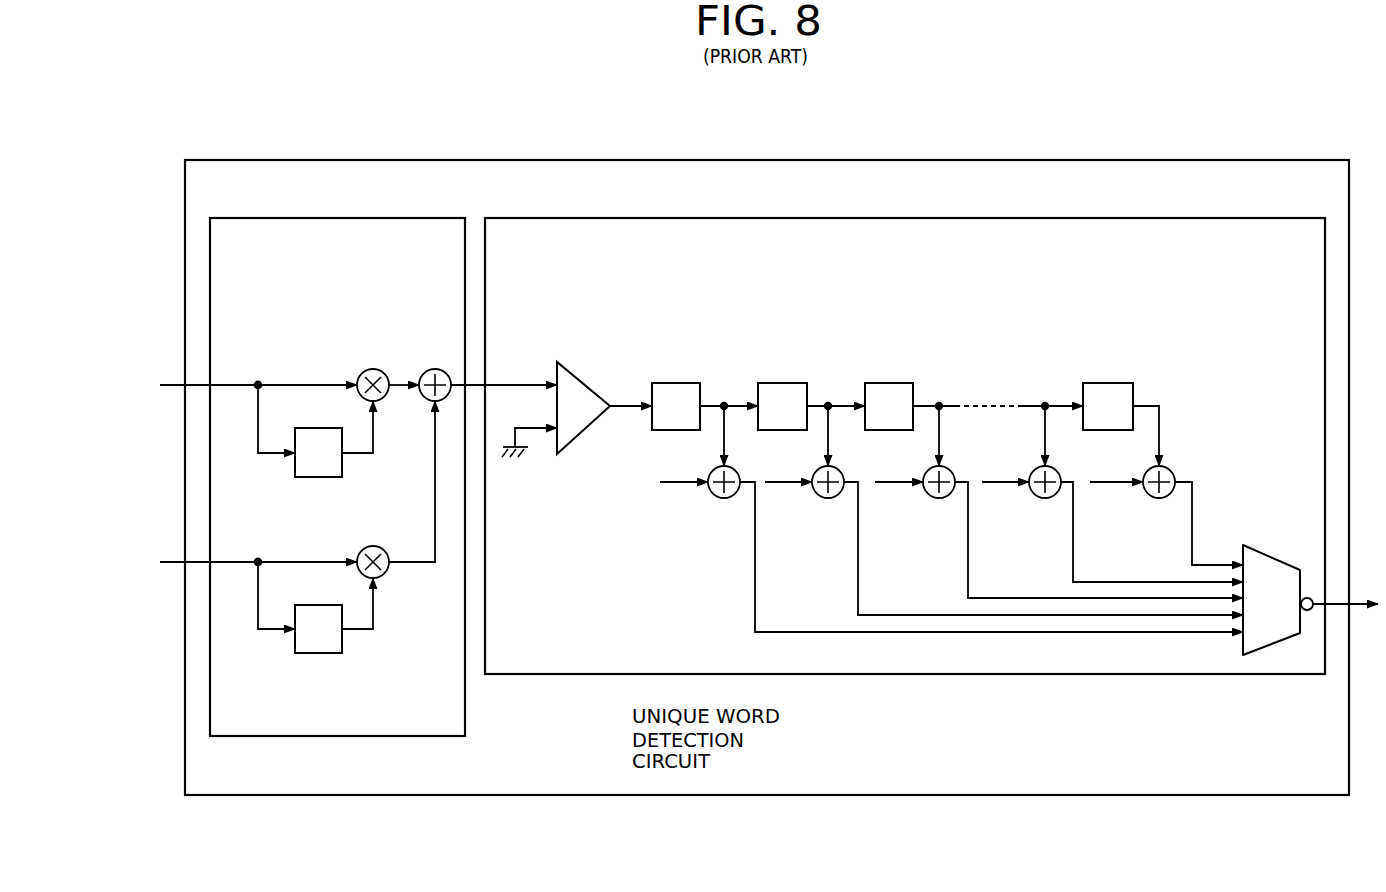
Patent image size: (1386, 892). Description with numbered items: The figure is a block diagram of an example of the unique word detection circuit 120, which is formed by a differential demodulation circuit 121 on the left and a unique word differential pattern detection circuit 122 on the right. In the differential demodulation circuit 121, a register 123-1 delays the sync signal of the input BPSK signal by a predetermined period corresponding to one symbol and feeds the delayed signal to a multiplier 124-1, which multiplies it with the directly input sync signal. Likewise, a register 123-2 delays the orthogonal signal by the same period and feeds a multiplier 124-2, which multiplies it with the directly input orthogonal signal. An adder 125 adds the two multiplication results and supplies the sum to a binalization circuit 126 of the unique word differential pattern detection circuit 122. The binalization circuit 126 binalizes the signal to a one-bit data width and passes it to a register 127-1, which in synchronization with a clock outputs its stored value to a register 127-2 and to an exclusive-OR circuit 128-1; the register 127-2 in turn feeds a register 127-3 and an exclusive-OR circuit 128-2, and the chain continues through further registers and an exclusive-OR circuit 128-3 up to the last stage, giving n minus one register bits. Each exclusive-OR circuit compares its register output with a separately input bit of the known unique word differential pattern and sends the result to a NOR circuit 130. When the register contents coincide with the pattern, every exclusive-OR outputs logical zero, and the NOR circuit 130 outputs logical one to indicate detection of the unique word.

The unique word detection circuit 120 is at (1230, 160).
The differential demodulation circuit 121 is at (355, 218).
The unique word differential pattern detection circuit 122 is at (1120, 218).
The register 123-1 is at (292, 468).
The register 123-2 is at (318, 655).
The multiplier 124-1 is at (365, 369).
The multiplier 124-2 is at (373, 545).
The adder 125 is at (435, 368).
The binalization circuit 126 is at (582, 375).
The register 127-1 is at (672, 382).
The register 127-2 is at (782, 382).
The register 127-3 is at (889, 382).
The exclusive-OR circuit 128-1 is at (718, 497).
The exclusive-OR circuit 128-2 is at (832, 497).
The exclusive-OR circuit 128-3 is at (943, 497).
The NOR circuit 130 is at (1275, 545).